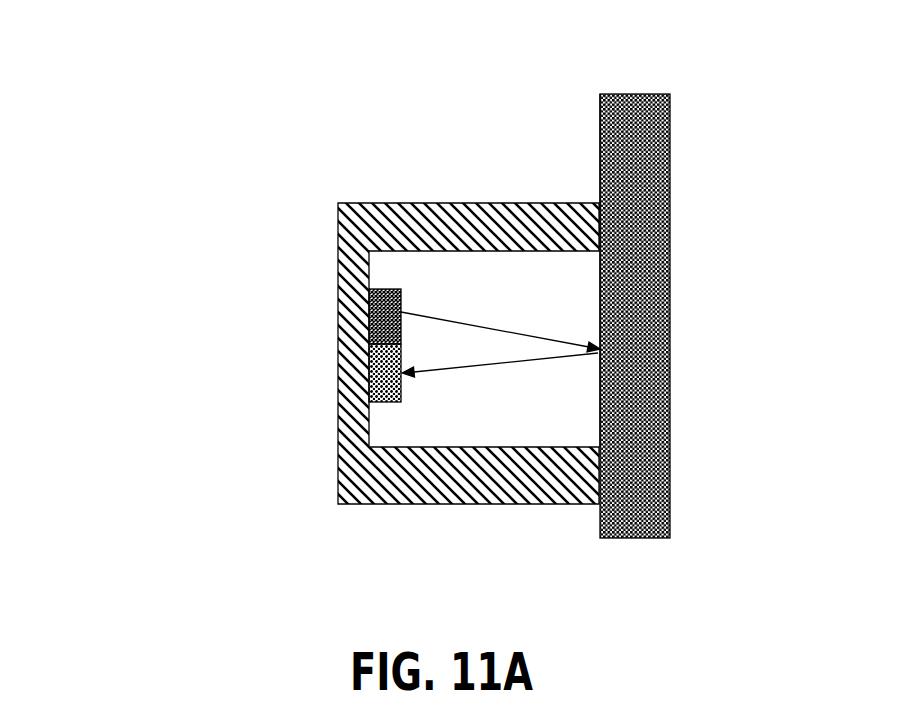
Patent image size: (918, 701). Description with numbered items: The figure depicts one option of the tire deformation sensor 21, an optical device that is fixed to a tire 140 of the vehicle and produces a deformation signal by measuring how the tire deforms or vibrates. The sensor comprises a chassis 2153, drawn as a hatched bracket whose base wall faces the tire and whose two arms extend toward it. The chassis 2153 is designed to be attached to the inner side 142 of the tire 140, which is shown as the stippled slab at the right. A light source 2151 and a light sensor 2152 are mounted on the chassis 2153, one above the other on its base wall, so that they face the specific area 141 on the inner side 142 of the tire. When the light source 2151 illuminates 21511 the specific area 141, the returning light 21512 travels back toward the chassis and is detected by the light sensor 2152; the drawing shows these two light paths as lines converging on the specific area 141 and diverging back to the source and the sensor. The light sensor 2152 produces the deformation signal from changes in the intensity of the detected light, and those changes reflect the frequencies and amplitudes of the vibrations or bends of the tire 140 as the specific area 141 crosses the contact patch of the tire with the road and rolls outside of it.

The tire deformation sensor 21 is at (335, 343).
The tire 140 is at (678, 124).
The specific area 141 is at (616, 365).
The inner side of the tire 142 is at (587, 123).
The light source 2151 is at (392, 272).
The light sensor 2152 is at (383, 414).
The chassis 2153 is at (325, 448).
The illumination 21511 is at (498, 312).
The returning light 21512 is at (483, 395).